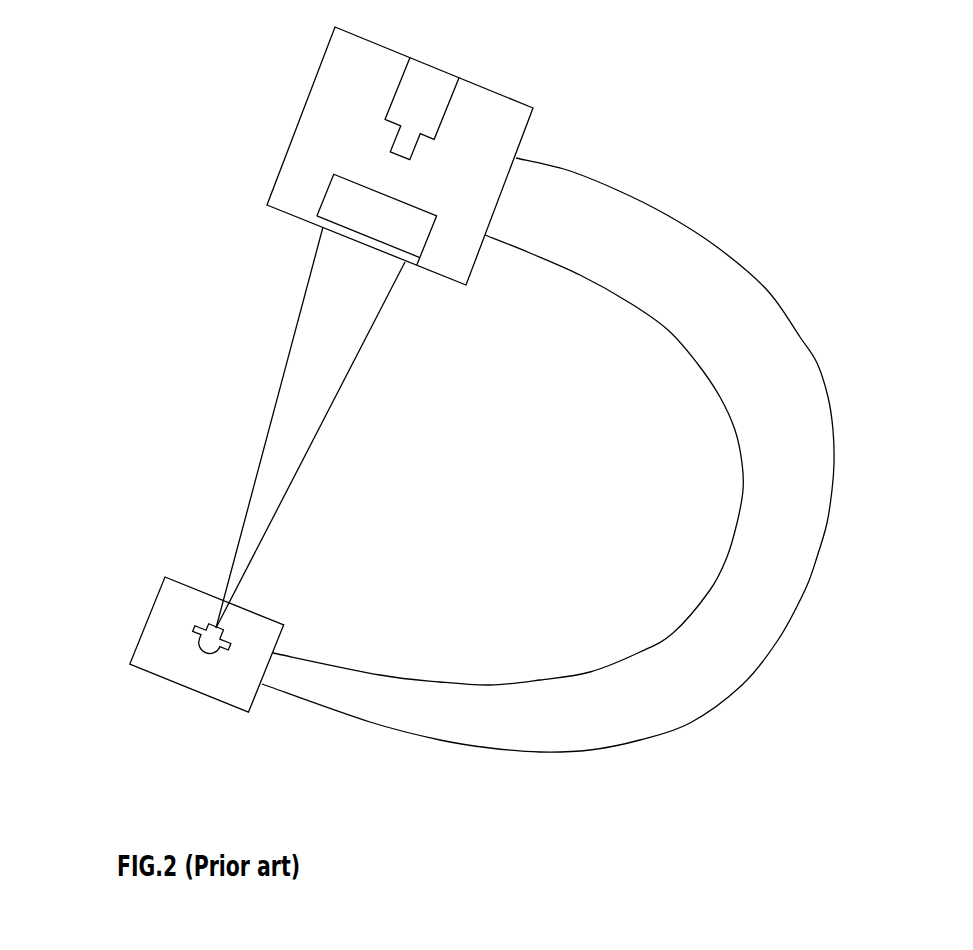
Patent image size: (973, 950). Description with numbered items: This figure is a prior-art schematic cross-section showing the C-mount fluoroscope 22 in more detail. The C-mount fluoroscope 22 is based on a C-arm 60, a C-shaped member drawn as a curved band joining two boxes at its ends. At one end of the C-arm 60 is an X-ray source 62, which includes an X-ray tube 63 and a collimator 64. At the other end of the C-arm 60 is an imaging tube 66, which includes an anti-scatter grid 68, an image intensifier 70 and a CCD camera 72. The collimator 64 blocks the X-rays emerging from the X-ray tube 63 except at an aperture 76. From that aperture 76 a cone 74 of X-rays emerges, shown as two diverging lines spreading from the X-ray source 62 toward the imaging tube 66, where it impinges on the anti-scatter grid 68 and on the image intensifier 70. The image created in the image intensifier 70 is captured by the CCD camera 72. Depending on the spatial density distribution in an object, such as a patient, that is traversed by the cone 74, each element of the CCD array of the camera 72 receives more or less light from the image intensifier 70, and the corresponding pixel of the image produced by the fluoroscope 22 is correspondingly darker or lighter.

The C-mount fluoroscope 22 is at (876, 318).
The C-arm 60 is at (753, 413).
The X-ray source 62 is at (147, 660).
The X-ray tube 63 is at (208, 657).
The collimator 64 is at (263, 617).
The imaging tube 66 is at (527, 133).
The anti-scatter grid 68 is at (407, 262).
The image intensifier 70 is at (365, 226).
The CCD camera 72 is at (409, 110).
The cone of X-rays 74 is at (327, 328).
The aperture 76 is at (223, 597).